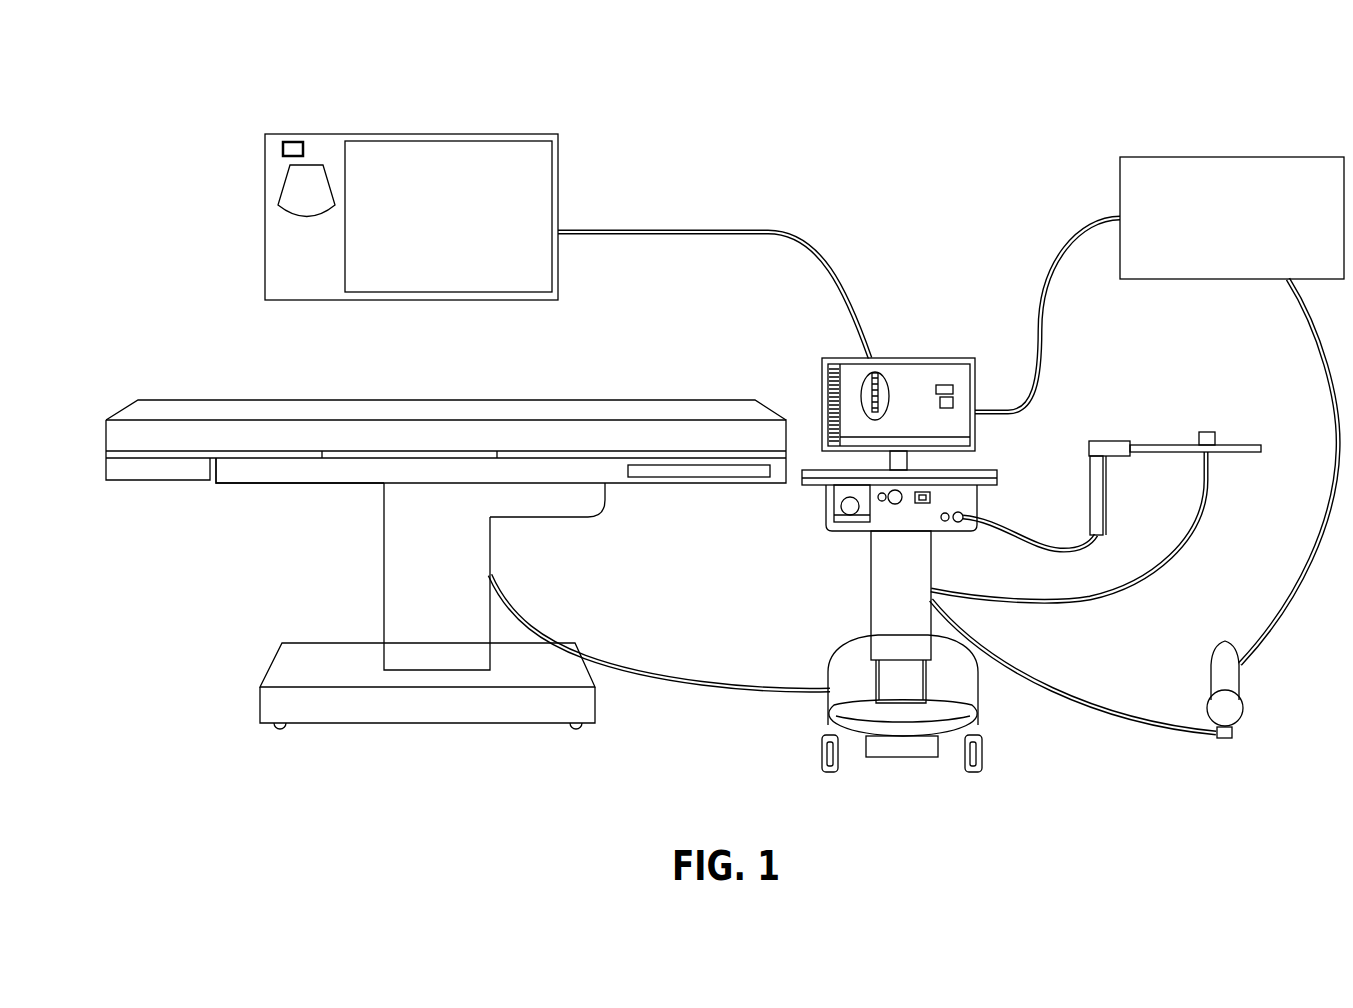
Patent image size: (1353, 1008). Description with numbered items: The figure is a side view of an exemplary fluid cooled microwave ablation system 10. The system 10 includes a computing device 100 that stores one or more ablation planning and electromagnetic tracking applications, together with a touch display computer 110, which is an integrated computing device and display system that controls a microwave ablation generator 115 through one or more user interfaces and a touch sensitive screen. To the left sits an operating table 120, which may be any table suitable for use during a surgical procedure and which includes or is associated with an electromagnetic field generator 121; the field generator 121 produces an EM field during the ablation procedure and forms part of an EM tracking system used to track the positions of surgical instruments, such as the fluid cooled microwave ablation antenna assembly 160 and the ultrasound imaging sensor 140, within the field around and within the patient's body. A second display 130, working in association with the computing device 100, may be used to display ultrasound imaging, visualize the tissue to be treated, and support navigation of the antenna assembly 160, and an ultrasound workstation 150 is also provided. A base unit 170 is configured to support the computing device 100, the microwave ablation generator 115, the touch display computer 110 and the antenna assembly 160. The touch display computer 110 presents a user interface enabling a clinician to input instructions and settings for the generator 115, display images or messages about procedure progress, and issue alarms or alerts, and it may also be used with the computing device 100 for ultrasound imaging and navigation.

The fluid cooled microwave ablation system 10 is at (380, 108).
The computing device 100 is at (871, 565).
The touch display computer 110 is at (918, 350).
The microwave ablation generator 115 is at (805, 510).
The operating table 120 is at (175, 407).
The electromagnetic (EM) field generator 121 is at (360, 458).
The second display 130 is at (563, 175).
The ultrasound imaging sensor 140 is at (1224, 641).
The ultrasound workstation 150 is at (1232, 218).
The fluid cooled microwave ablation antenna assembly 160 is at (1108, 440).
The base unit 170 is at (800, 745).